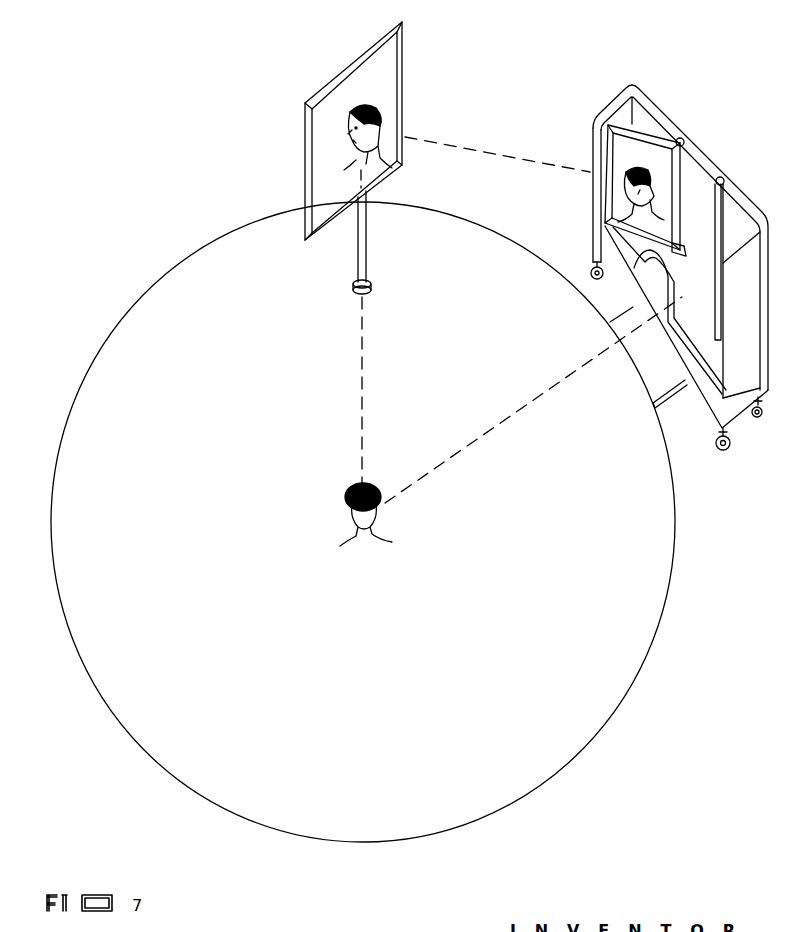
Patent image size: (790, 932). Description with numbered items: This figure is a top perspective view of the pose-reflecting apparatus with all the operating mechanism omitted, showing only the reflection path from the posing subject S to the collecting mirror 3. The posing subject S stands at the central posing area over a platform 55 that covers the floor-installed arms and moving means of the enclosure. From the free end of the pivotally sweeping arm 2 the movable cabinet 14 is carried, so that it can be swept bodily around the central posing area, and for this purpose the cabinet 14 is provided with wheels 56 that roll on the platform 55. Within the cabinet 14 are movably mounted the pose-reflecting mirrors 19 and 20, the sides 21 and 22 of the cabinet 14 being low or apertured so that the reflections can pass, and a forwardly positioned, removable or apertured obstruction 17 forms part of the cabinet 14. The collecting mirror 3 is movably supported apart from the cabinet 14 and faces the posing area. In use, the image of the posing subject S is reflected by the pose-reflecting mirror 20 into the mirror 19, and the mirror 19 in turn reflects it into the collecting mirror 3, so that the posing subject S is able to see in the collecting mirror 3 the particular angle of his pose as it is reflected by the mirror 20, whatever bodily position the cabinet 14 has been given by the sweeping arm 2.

The pivotally sweeping arm 2 is at (672, 398).
The collecting mirror 3 is at (405, 57).
The cabinet 14 is at (652, 98).
The obstruction 17 is at (677, 298).
The pose-reflecting mirror 19 is at (647, 130).
The pose-reflecting mirror 20 is at (722, 203).
The side of cabinet 21 is at (603, 113).
The side of cabinet 22 is at (741, 315).
The platform 55 is at (670, 610).
The wheels 56 is at (723, 451).
The posing subject S is at (345, 513).